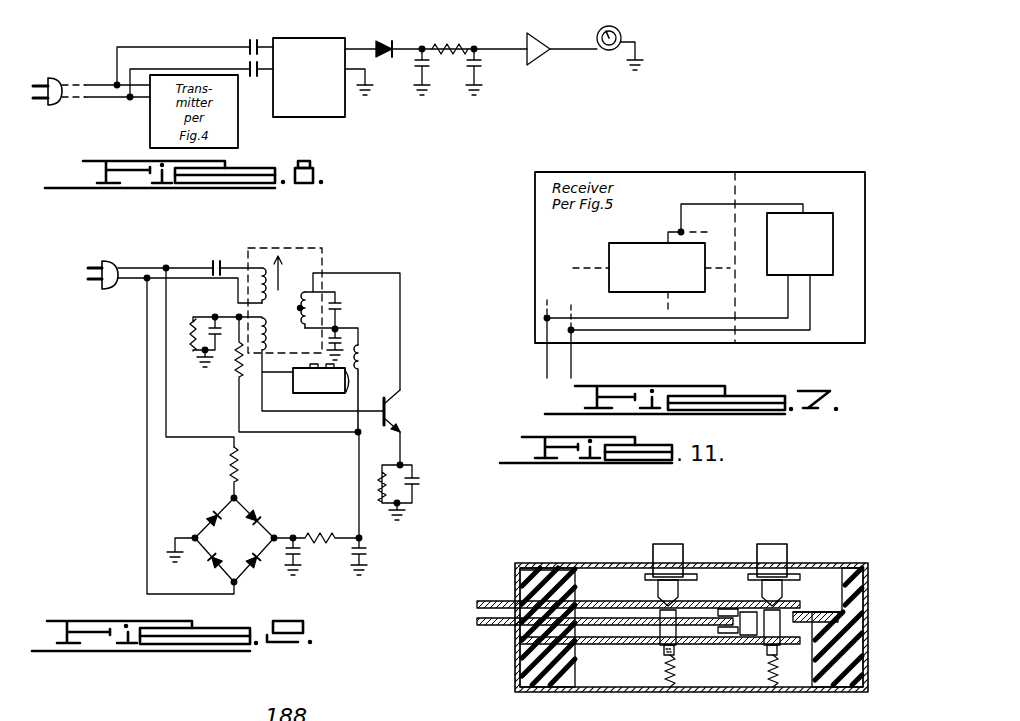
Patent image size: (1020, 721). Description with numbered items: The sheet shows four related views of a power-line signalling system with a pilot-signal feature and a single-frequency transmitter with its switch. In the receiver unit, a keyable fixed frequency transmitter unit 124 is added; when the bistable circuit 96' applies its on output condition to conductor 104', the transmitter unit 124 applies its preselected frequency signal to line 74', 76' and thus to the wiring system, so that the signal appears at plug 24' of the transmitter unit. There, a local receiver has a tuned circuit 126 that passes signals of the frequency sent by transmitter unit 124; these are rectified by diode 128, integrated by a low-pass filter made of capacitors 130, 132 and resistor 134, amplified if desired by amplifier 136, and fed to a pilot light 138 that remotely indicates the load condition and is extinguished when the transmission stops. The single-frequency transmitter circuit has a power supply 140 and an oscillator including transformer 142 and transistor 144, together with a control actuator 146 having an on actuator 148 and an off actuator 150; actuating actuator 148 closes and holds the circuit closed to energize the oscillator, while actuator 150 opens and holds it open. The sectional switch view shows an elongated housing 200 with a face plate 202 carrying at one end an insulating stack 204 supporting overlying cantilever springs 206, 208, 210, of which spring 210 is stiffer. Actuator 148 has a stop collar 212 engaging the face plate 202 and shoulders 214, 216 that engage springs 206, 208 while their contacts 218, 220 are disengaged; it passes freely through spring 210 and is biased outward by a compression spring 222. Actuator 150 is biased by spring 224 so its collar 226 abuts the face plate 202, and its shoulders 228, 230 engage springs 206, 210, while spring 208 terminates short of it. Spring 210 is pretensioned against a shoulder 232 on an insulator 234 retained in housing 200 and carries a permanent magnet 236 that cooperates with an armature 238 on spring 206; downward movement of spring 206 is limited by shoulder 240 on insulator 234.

In FIG. 8, the plug 24' is at (59, 59).
In FIG. 8, the tuned circuit 126 is at (322, 60).
In FIG. 8, the diode 128 is at (411, 29).
In FIG. 8, the capacitor 130 is at (448, 89).
In FIG. 8, the capacitor 132 is at (518, 79).
In FIG. 8, the resistor 134 is at (476, 28).
In FIG. 8, the amplifier 136 is at (562, 33).
In FIG. 8, the pilot light 138 is at (649, 36).
In FIG. 9, the power supply 140 is at (264, 516).
In FIG. 9, the transformer 142 is at (334, 277).
In FIG. 9, the transistor 144 is at (436, 411).
In FIG. 9, the control actuator 146 is at (319, 378).
In FIG. 11, the control actuator 146 is at (712, 595).
In FIG. 9, the on actuator 148 is at (279, 381).
In FIG. 11, the on actuator 148 is at (654, 537).
In FIG. 9, the off actuator 150 is at (327, 416).
In FIG. 11, the off actuator 150 is at (785, 537).
In FIG. 7, the bistable circuit 96' is at (626, 266).
In FIG. 7, the conductor 104' is at (735, 180).
In FIG. 7, the keyable fixed frequency transmitter unit 124 is at (831, 196).
In FIG. 7, the line 74' is at (512, 341).
In FIG. 7, the line 76' is at (610, 344).
In FIG. 11, the housing 200 is at (646, 628).
In FIG. 11, the face plate 202 is at (553, 603).
In FIG. 11, the insulating stack 204 is at (515, 582).
In FIG. 11, the cantilever spring 206 is at (638, 544).
In FIG. 11, the cantilever spring 208 is at (660, 660).
In FIG. 11, the cantilever spring 210 is at (644, 672).
In FIG. 11, the stop collar 212 is at (686, 554).
In FIG. 11, the shoulder 214 is at (639, 613).
In FIG. 11, the shoulder 216 is at (691, 562).
In FIG. 11, the contact 218 is at (738, 566).
In FIG. 11, the contact 220 is at (709, 665).
In FIG. 11, the compression spring 222 is at (630, 683).
In FIG. 11, the spring 224 is at (818, 683).
In FIG. 11, the collar 226 is at (801, 523).
In FIG. 11, the shoulder 228 is at (813, 567).
In FIG. 11, the shoulder 230 is at (825, 628).
In FIG. 11, the shoulder 232 is at (866, 627).
In FIG. 11, the insulator 234 is at (891, 683).
In FIG. 11, the permanent magnet 236 is at (731, 666).
In FIG. 11, the armature 238 is at (762, 553).
In FIG. 11, the shoulder 240 is at (855, 593).